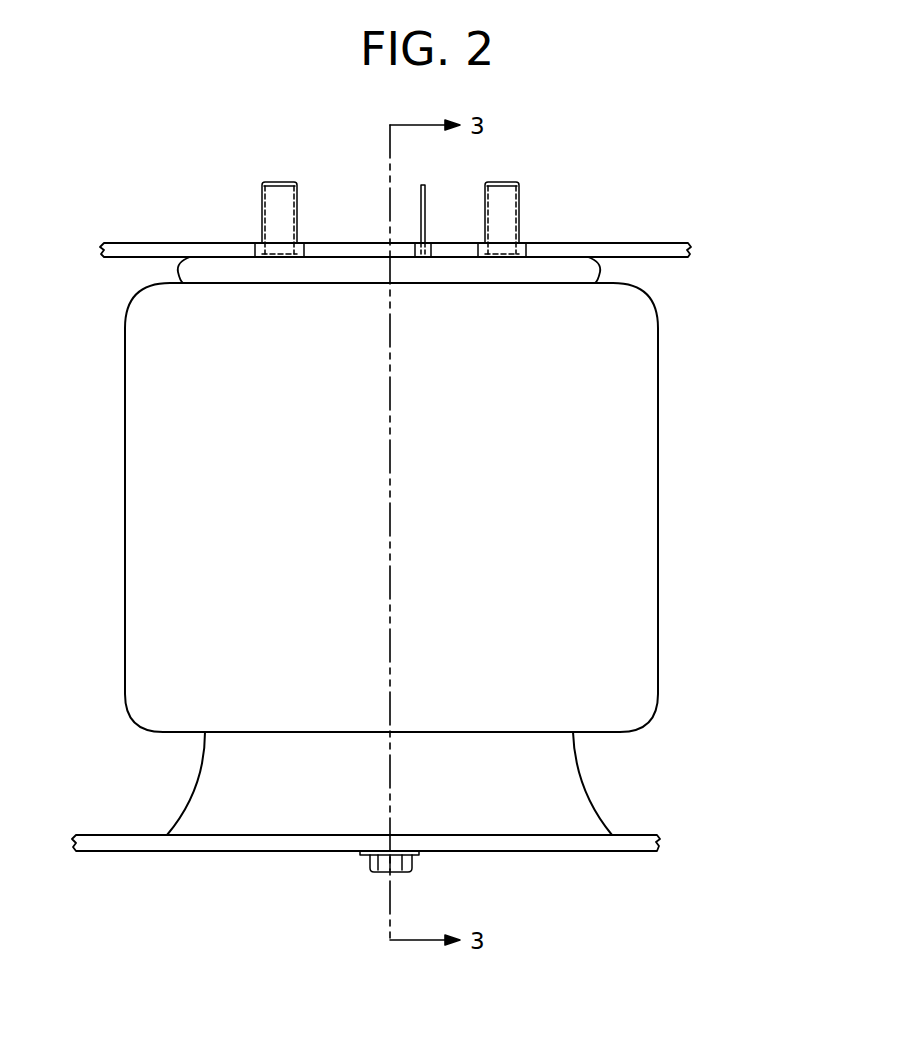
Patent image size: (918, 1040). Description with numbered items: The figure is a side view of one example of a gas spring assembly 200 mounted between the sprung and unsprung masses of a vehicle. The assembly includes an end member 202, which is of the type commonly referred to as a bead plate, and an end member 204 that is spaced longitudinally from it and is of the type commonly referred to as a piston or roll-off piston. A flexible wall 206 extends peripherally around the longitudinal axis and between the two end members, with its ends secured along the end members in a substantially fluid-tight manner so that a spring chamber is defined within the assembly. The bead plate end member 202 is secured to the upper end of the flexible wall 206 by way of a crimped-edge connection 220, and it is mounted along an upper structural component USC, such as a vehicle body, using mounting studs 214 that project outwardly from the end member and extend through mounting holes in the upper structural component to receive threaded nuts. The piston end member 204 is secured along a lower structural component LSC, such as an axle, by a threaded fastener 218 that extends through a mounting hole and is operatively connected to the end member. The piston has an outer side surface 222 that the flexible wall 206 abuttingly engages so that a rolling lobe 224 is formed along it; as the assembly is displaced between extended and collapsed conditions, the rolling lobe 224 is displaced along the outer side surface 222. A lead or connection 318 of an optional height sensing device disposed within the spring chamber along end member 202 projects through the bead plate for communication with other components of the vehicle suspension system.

The gas spring assembly 200 is at (656, 212).
The end member 202 is at (568, 254).
The end member 204 is at (608, 778).
The flexible wall 206 is at (676, 557).
The mounting studs 214 is at (262, 207).
The threaded fastener 218 is at (366, 862).
The crimped-edge connection 220 is at (602, 270).
The outer side surface 222 is at (217, 780).
The rolling lobe 224 is at (148, 729).
The lead or connection 318 is at (425, 198).
The upper structural component USC is at (143, 248).
The lower structural component LSC is at (135, 842).